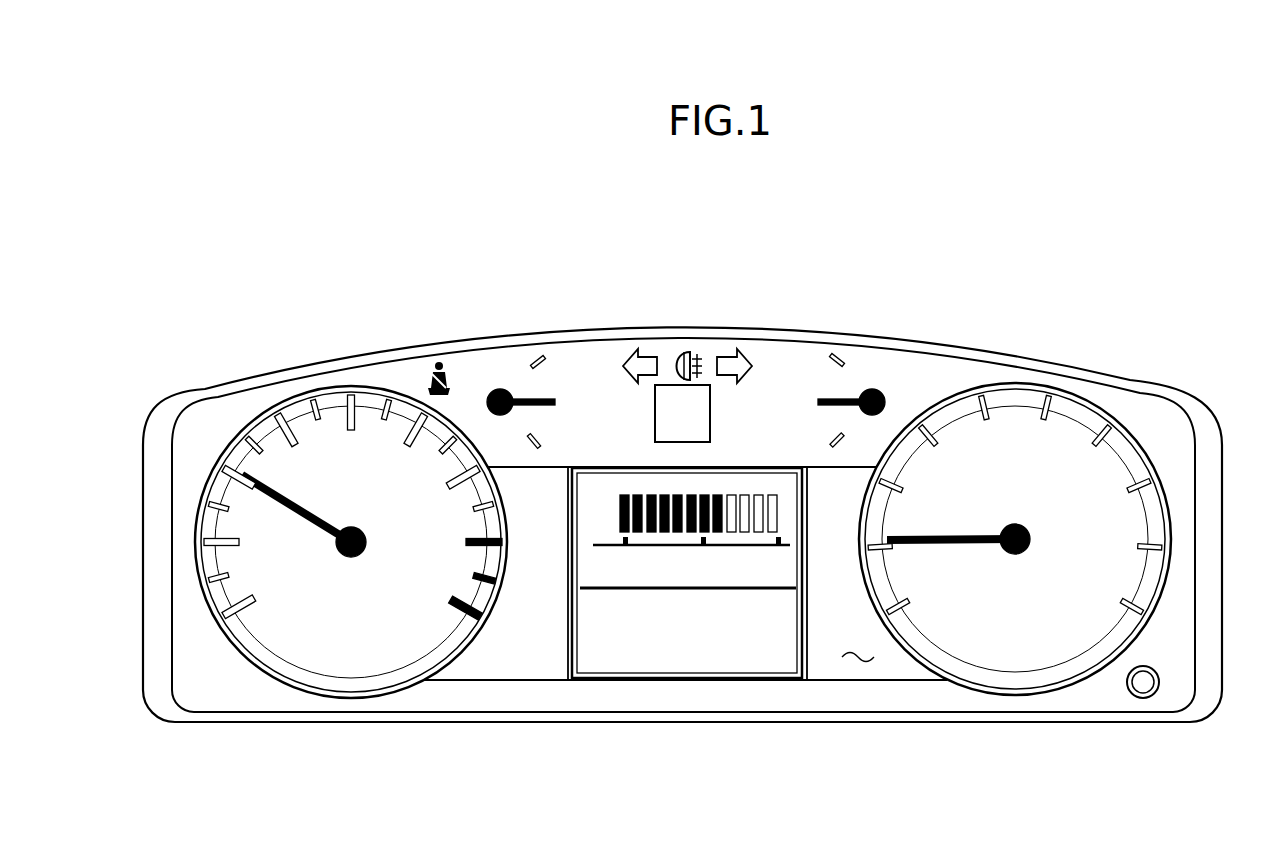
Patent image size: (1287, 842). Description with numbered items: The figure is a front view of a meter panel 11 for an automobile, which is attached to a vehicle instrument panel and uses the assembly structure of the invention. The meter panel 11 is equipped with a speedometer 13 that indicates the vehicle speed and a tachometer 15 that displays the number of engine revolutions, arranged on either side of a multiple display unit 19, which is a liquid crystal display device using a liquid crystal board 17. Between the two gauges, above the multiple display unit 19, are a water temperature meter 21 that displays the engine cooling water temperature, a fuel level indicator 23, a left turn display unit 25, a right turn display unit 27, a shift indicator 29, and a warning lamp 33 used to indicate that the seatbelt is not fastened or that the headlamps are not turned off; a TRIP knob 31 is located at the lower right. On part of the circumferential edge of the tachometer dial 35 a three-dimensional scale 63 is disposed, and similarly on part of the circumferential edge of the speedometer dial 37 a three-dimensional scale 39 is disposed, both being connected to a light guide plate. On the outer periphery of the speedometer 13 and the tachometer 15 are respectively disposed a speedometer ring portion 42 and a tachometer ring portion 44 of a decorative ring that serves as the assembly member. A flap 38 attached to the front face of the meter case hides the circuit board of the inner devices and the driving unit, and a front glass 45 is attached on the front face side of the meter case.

The meter panel 11 is at (335, 278).
The speedometer 13 is at (968, 384).
The tachometer 15 is at (313, 378).
The liquid crystal board 17 is at (648, 663).
The multiple display unit 19 is at (772, 683).
The water temperature meter 21 is at (541, 378).
The fuel level indicator 23 is at (810, 367).
The left turn display unit 25 is at (647, 348).
The right turn display unit 27 is at (730, 348).
The shift indicator 29 is at (651, 417).
The TRIP knob 31 is at (1131, 698).
The warning lamp 33 is at (445, 362).
The tachometer dial 35 is at (352, 663).
The speedometer dial 37 is at (1023, 663).
The flap 38 is at (947, 721).
The three-dimensional scale 39 is at (1126, 435).
The speedometer ring portion 42 is at (1087, 410).
The tachometer ring portion 44 is at (370, 392).
The front glass 45 is at (850, 662).
The three-dimensional scale 63 is at (450, 607).